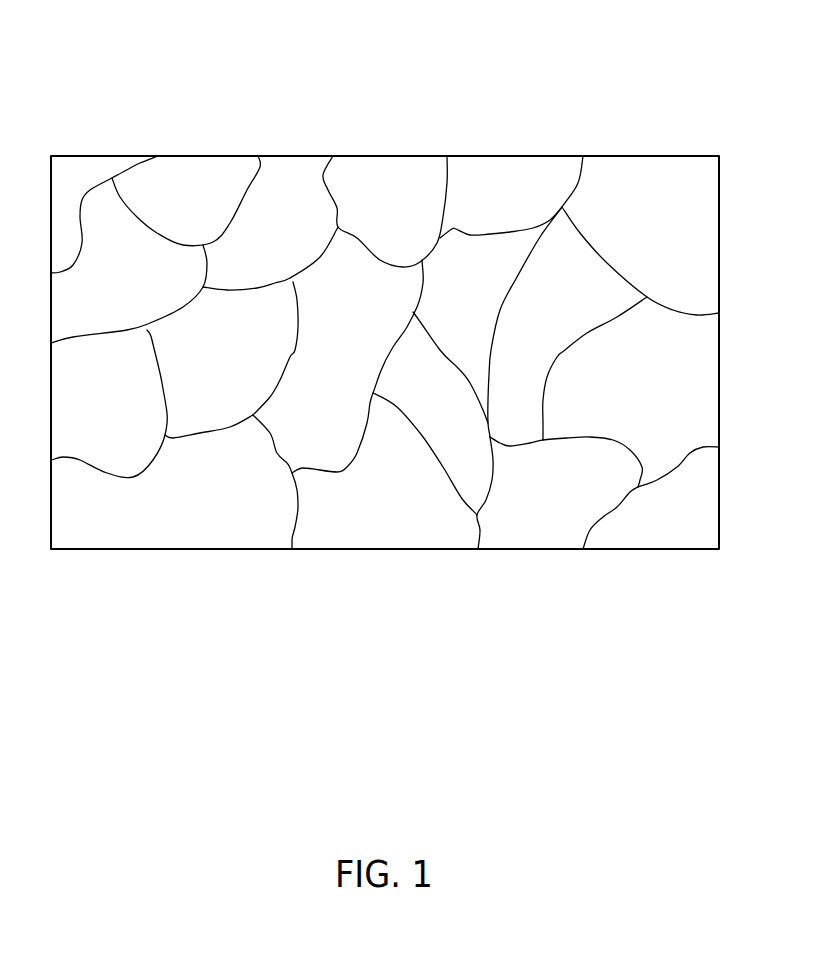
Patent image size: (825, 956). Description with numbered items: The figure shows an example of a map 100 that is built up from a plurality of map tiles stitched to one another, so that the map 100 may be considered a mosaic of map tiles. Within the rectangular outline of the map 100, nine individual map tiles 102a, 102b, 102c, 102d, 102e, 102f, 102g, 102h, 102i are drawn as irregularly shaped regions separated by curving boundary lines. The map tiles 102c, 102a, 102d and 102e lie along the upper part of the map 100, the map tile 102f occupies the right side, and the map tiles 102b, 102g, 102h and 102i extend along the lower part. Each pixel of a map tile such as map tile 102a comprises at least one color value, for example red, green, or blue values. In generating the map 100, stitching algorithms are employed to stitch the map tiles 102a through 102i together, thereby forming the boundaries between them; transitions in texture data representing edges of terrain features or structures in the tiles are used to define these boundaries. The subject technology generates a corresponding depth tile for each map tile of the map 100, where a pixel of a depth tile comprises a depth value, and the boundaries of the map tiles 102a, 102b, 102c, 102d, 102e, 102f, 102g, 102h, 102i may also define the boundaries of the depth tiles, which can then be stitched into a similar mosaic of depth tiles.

The map 100 is at (637, 549).
The map tile 102a is at (122, 238).
The map tile 102b is at (96, 444).
The map tile 102c is at (68, 196).
The map tile 102d is at (377, 180).
The map tile 102e is at (672, 218).
The map tile 102f is at (672, 395).
The map tile 102g is at (321, 435).
The map tile 102h is at (426, 532).
The map tile 102i is at (523, 532).